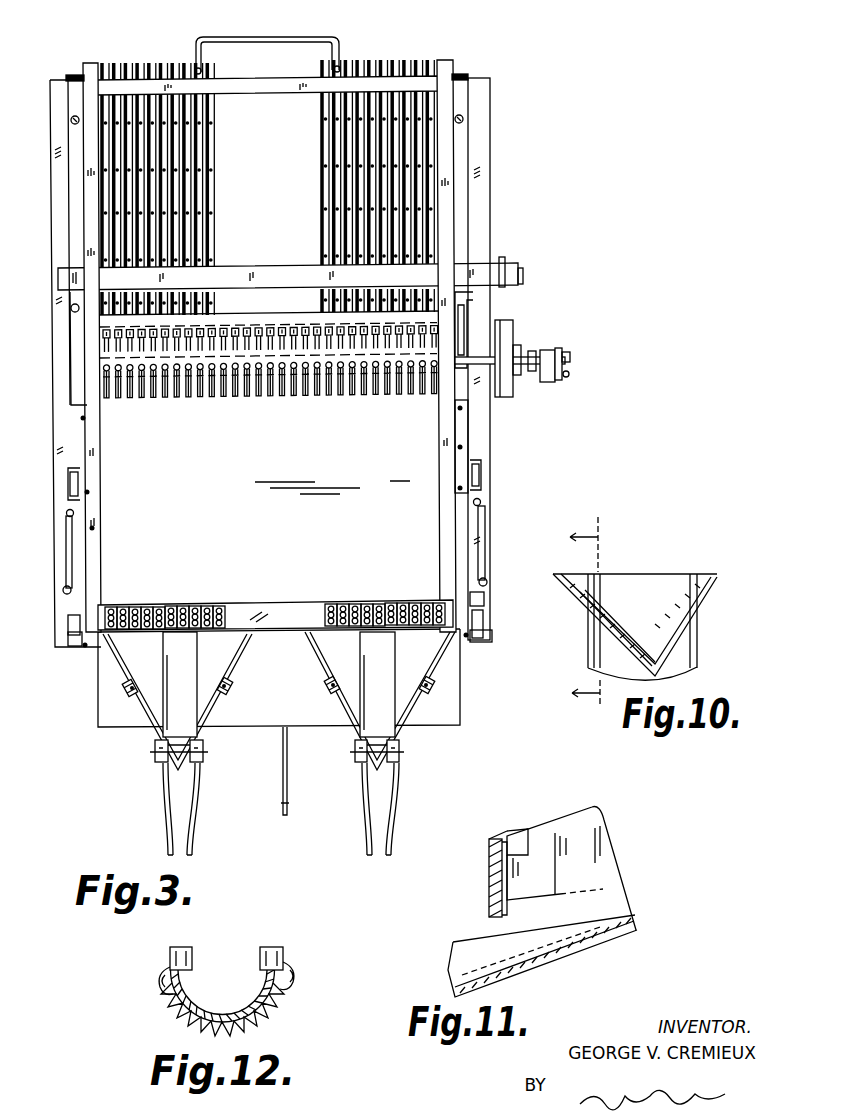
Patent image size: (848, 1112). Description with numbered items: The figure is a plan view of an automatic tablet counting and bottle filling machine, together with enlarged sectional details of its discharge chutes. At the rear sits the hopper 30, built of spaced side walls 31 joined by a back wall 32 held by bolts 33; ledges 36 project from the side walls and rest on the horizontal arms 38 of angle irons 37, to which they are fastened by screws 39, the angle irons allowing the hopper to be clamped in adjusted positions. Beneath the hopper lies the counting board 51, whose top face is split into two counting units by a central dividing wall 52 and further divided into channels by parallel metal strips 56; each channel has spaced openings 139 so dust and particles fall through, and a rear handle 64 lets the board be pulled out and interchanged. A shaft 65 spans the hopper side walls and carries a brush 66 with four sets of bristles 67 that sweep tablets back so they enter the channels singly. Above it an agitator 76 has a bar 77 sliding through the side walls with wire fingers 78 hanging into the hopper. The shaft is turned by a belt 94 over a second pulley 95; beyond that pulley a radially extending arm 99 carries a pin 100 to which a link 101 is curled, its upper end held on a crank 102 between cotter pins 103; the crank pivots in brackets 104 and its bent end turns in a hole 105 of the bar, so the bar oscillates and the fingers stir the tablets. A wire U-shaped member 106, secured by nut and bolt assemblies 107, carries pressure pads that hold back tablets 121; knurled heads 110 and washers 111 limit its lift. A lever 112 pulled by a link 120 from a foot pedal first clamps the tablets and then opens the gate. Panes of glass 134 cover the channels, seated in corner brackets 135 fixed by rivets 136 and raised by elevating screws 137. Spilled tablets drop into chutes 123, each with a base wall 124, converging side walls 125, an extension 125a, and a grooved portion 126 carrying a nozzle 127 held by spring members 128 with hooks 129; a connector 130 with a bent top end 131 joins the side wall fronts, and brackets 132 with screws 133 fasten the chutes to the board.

In FIG. 3, the hopper 30 is at (79, 375).
In FIG. 3, the side walls 31 is at (90, 212).
In FIG. 3, the back wall 32 is at (407, 80).
In FIG. 3, the bolts 33 is at (82, 77).
In FIG. 3, the ledges 36 is at (70, 146).
In FIG. 3, the angle irons 37 is at (499, 198).
In FIG. 3, the horizontal arms 38 is at (52, 177).
In FIG. 3, the screws 39 is at (72, 120).
In FIG. 3, the counting board 51 is at (128, 64).
In FIG. 3, the dividing wall 52 is at (283, 80).
In FIG. 3, the metal strips 56 is at (380, 62).
In FIG. 3, the handle 64 is at (243, 37).
In FIG. 3, the shaft 65 is at (530, 366).
In FIG. 3, the brush 66 is at (270, 394).
In FIG. 3, the bristles 67 is at (185, 396).
In FIG. 3, the agitator 76 is at (270, 258).
In FIG. 3, the bar 77 is at (58, 280).
In FIG. 3, the fingers 78 is at (180, 294).
In FIG. 3, the belt 94 is at (512, 322).
In FIG. 3, the second pulley 95 is at (520, 332).
In FIG. 3, the radially extending arm 99 is at (548, 380).
In FIG. 3, the pin 100 is at (569, 376).
In FIG. 3, the link 101 is at (570, 364).
In FIG. 3, the crank 102 is at (535, 354).
In FIG. 3, the cotter pins 103 is at (568, 356).
In FIG. 3, the brackets 104 is at (462, 339).
In FIG. 3, the hole 105 is at (521, 263).
In FIG. 3, the U-shaped member 106 is at (73, 552).
In FIG. 3, the nut and bolt assemblies 107 is at (63, 589).
In FIG. 3, the knurled heads 110 is at (66, 518).
In FIG. 3, the washers 111 is at (66, 511).
In FIG. 3, the lever 112 is at (283, 780).
In FIG. 3, the link 120 is at (286, 815).
In FIG. 3, the tablets 121 is at (182, 605).
In FIG. 3, the chutes 123 is at (142, 725).
In FIG. 10, the chutes 123 is at (724, 609).
In FIG. 11, the chutes 123 is at (643, 857).
In FIG. 12, the chutes 123 is at (234, 963).
In FIG. 3, the base wall 124 is at (328, 652).
In FIG. 10, the base wall 124 is at (592, 575).
In FIG. 11, the base wall 124 is at (603, 890).
In FIG. 3, the side walls 125 is at (122, 680).
In FIG. 10, the side walls 125 is at (670, 625).
In FIG. 11, the side walls 125 is at (607, 850).
In FIG. 10, the extension 125a is at (622, 654).
In FIG. 3, the grooved portion 126 is at (190, 675).
In FIG. 10, the grooved portion 126 is at (689, 661).
In FIG. 11, the grooved portion 126 is at (552, 933).
In FIG. 12, the grooved portion 126 is at (228, 1012).
In FIG. 3, the nozzles 127 is at (167, 818).
In FIG. 12, the nozzles 127 is at (175, 1010).
In FIG. 3, the spring members 128 is at (205, 752).
In FIG. 12, the spring members 128 is at (280, 1008).
In FIG. 3, the hooks 129 is at (157, 763).
In FIG. 12, the hooks 129 is at (170, 960).
In FIG. 3, the connector 130 is at (156, 752).
In FIG. 10, the connector 130 is at (690, 640).
In FIG. 11, the connector 130 is at (490, 881).
In FIG. 11, the top end 131 is at (521, 835).
In FIG. 3, the brackets 132 is at (122, 686).
In FIG. 3, the screws 133 is at (143, 706).
In FIG. 3, the panes of glass 134 is at (456, 447).
In FIG. 3, the corner brackets 135 is at (74, 470).
In FIG. 3, the rivets 136 is at (72, 492).
In FIG. 3, the elevating screws 137 is at (80, 420).
In FIG. 3, the openings 139 is at (200, 170).